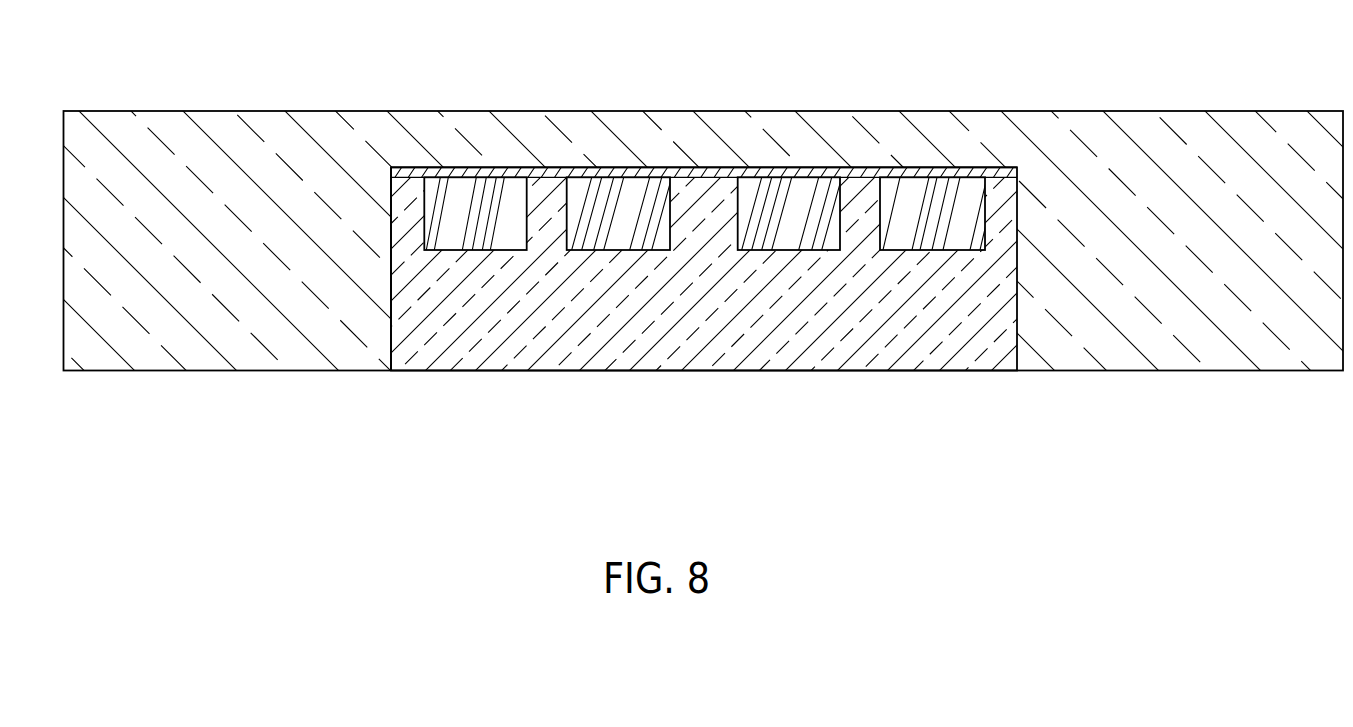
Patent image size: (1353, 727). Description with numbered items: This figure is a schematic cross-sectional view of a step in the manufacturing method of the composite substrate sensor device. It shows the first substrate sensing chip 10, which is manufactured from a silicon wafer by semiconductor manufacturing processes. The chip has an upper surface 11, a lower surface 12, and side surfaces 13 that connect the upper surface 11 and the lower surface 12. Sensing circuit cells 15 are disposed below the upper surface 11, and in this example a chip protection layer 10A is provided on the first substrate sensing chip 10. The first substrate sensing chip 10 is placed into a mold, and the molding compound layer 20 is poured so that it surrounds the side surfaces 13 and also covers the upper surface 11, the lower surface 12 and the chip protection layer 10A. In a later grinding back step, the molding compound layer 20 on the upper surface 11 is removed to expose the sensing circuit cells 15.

The first substrate sensing chip 10 is at (709, 363).
The chip protection layer 10A is at (623, 168).
The upper surface 11 is at (858, 178).
The lower surface 12 is at (623, 371).
The side surfaces 13 is at (391, 283).
The sensing circuit cells 15 is at (449, 240).
The molding compound layer 20 is at (1178, 360).